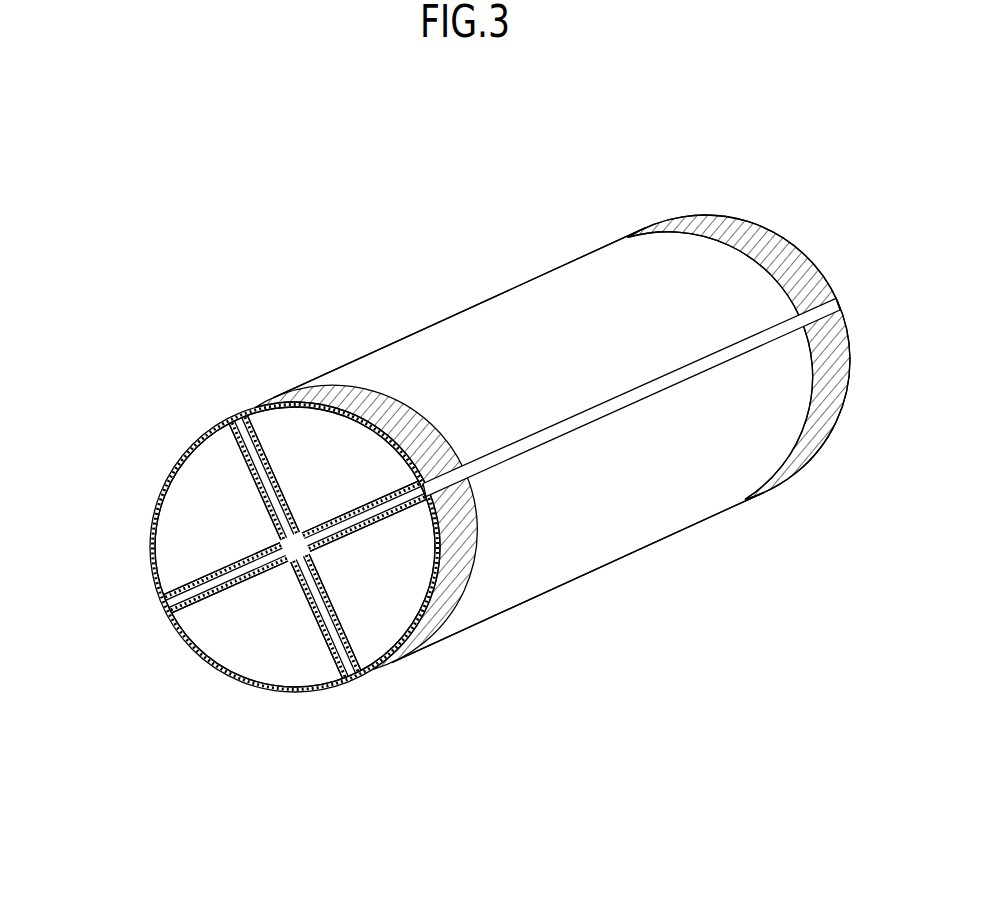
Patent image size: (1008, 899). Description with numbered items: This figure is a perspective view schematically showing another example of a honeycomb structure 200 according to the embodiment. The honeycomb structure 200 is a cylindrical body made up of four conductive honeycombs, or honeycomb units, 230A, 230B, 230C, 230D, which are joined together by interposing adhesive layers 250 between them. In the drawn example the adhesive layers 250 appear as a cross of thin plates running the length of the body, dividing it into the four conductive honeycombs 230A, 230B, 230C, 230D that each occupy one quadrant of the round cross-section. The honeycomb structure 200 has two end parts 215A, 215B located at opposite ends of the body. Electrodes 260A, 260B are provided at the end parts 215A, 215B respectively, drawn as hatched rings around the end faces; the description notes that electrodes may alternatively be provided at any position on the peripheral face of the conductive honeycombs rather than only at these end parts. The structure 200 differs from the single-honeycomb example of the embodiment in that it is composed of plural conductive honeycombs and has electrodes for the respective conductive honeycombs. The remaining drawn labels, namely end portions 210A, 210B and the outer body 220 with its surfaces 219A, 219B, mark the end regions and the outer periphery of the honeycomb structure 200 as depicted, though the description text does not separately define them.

The honeycomb structure 200 is at (553, 122).
The first end portion 210A is at (142, 644).
The second end portion 210B is at (793, 220).
The end part 215A is at (200, 410).
The end part 215B is at (797, 507).
The tubular body 220 is at (462, 335).
The outer peripheral surface 219A is at (459, 313).
The outer peripheral surface 219B is at (584, 577).
The conductive honeycomb 230A is at (268, 438).
The conductive honeycomb 230B is at (372, 622).
The conductive honeycomb 230C is at (262, 643).
The conductive honeycomb 230D is at (187, 533).
The adhesive layer 250 is at (560, 418).
The electrode 260A is at (369, 405).
The electrode 260B is at (698, 222).